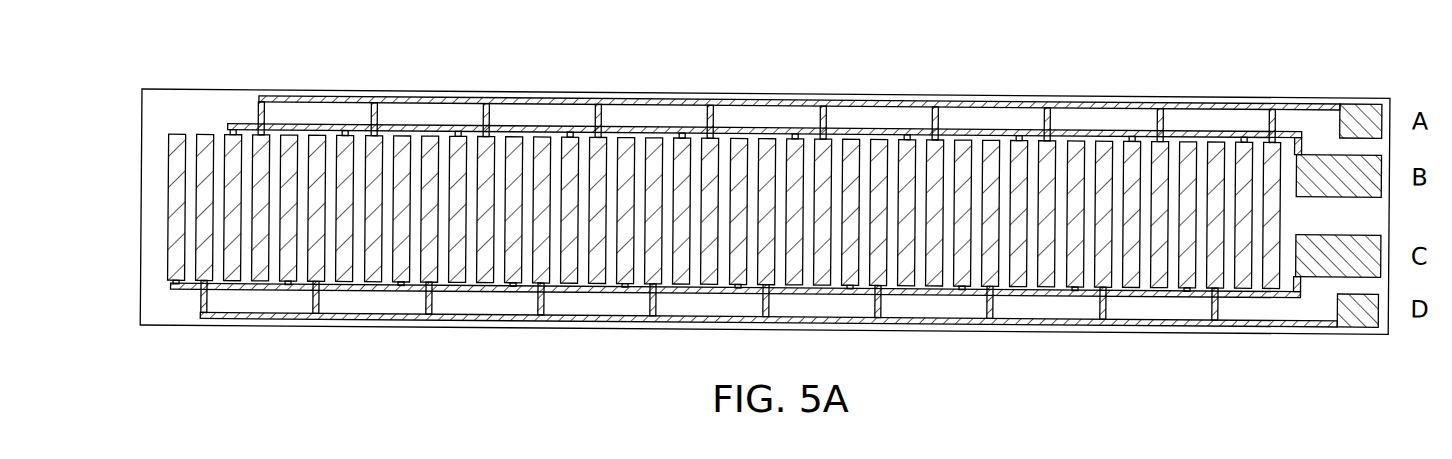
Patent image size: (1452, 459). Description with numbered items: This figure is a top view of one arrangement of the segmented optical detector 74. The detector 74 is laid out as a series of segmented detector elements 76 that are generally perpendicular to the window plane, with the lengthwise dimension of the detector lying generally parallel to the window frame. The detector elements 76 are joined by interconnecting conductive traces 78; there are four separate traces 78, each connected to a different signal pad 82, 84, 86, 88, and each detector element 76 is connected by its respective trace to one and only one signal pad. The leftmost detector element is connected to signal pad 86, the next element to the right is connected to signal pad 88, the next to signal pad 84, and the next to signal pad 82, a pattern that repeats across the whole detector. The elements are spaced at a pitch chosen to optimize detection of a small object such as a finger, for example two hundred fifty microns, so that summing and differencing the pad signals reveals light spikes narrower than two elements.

The segmented optical detector 74 is at (741, 44).
The segmented detector elements 76 is at (227, 188).
The interconnecting conductive traces 78 is at (304, 122).
The signal pad 82 is at (1348, 88).
The signal pad 84 is at (1336, 141).
The signal pad 86 is at (1336, 268).
The signal pad 88 is at (1355, 318).